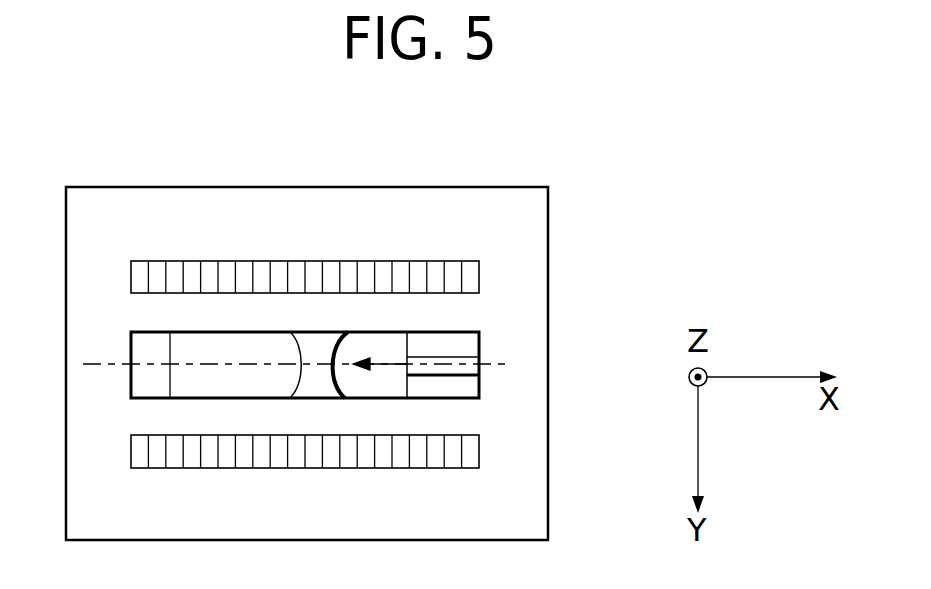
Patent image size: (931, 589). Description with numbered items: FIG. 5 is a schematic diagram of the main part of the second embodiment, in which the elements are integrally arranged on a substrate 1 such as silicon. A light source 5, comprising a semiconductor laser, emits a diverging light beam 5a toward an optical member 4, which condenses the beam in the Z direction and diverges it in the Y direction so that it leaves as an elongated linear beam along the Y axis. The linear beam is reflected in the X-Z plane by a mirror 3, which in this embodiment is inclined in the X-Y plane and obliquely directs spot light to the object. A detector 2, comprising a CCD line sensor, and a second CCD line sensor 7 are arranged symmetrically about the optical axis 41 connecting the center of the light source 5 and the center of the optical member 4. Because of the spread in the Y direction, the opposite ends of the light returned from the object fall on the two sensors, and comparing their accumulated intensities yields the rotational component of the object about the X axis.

The substrate 1 is at (148, 187).
The detector 2 is at (203, 261).
The mirror 3 is at (140, 382).
The optical member 4 is at (338, 384).
The light source 5 is at (468, 390).
The light beam 5a is at (380, 362).
The CCD line sensor 7 is at (202, 468).
The optical axis 41 is at (227, 354).